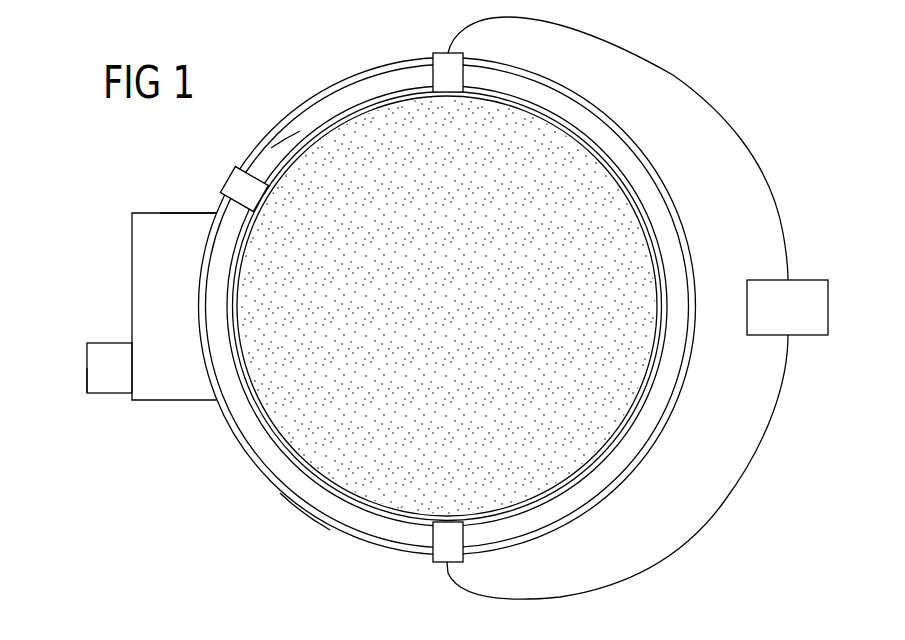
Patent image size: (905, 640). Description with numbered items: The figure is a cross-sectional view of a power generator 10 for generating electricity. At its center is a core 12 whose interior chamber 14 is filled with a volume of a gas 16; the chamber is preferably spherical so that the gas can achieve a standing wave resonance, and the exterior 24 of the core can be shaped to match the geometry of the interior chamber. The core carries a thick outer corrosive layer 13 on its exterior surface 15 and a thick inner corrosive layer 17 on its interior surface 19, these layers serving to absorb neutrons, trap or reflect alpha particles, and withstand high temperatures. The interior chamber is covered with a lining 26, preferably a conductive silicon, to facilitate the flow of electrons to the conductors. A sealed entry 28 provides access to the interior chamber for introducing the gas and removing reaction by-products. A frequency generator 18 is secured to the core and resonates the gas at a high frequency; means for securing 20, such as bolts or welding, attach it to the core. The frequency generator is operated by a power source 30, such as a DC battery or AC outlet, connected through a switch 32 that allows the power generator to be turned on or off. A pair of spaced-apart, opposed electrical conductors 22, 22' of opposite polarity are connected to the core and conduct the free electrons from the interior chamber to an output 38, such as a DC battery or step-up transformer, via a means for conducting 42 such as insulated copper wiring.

The power generator 10 is at (256, 59).
The core 12 is at (456, 305).
The outer corrosive layer 13 is at (620, 132).
The interior chamber 14 is at (377, 113).
The exterior surface 15 is at (653, 177).
The gas 16 is at (407, 213).
The inner corrosive layer 17 is at (305, 142).
The frequency generator 18 is at (132, 262).
The interior surface 19 is at (393, 92).
The means for securing 20 is at (216, 213).
The electrical conductor 22 is at (419, 55).
The electrical conductor 22' is at (415, 562).
The exterior 24 is at (310, 512).
The lining 26 is at (263, 150).
The sealed entry 28 is at (228, 170).
The power source 30 is at (87, 352).
The switch 32 is at (87, 378).
The output 38 is at (793, 335).
The means for conducting 42 is at (678, 63).